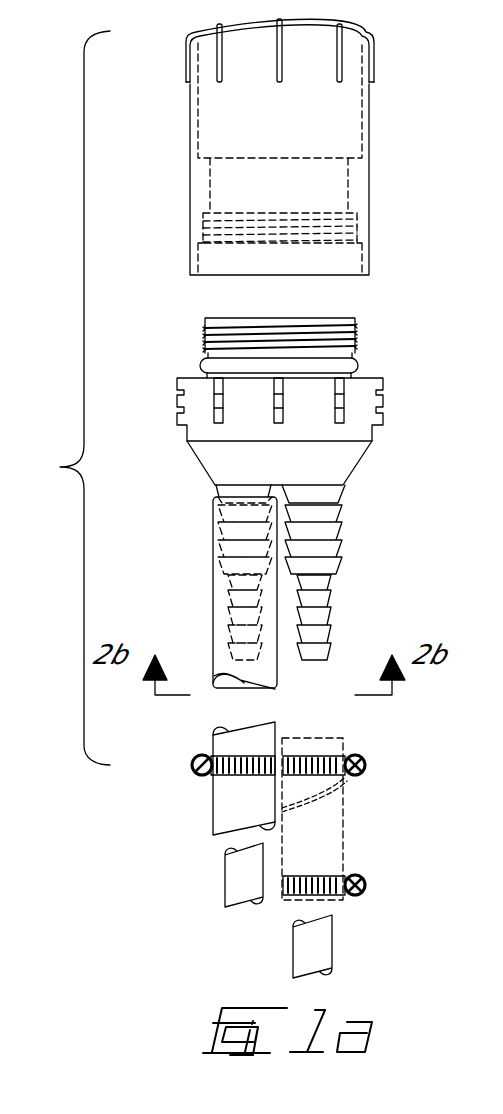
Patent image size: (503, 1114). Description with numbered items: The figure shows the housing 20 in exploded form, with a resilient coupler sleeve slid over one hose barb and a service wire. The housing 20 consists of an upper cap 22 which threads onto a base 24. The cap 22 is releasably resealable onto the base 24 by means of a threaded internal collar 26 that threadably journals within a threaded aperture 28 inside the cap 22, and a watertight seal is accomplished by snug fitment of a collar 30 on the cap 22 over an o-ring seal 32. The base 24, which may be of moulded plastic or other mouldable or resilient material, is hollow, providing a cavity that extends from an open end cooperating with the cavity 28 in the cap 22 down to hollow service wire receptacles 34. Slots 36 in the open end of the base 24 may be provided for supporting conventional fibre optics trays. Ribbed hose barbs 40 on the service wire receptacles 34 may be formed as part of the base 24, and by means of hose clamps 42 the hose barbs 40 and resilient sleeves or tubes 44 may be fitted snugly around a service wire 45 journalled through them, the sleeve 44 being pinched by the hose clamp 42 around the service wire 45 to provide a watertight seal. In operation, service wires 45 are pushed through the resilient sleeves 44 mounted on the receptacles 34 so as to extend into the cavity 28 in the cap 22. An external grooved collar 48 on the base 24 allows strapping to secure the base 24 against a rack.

The housing 20 is at (59, 398).
The upper cap 22 is at (363, 92).
The base 24 is at (350, 460).
The threaded internal collar 26 is at (355, 335).
The threaded aperture 28 is at (327, 226).
The collar 30 is at (365, 262).
The o-ring seal 32 is at (342, 362).
The service wire receptacle 34 is at (222, 532).
The slots 36 is at (330, 318).
The hose barb 40 is at (337, 512).
The hose clamp 42 is at (330, 755).
The resilient sleeve 44 is at (215, 605).
The service wire 45 is at (238, 880).
The external grooved collar 48 is at (383, 416).